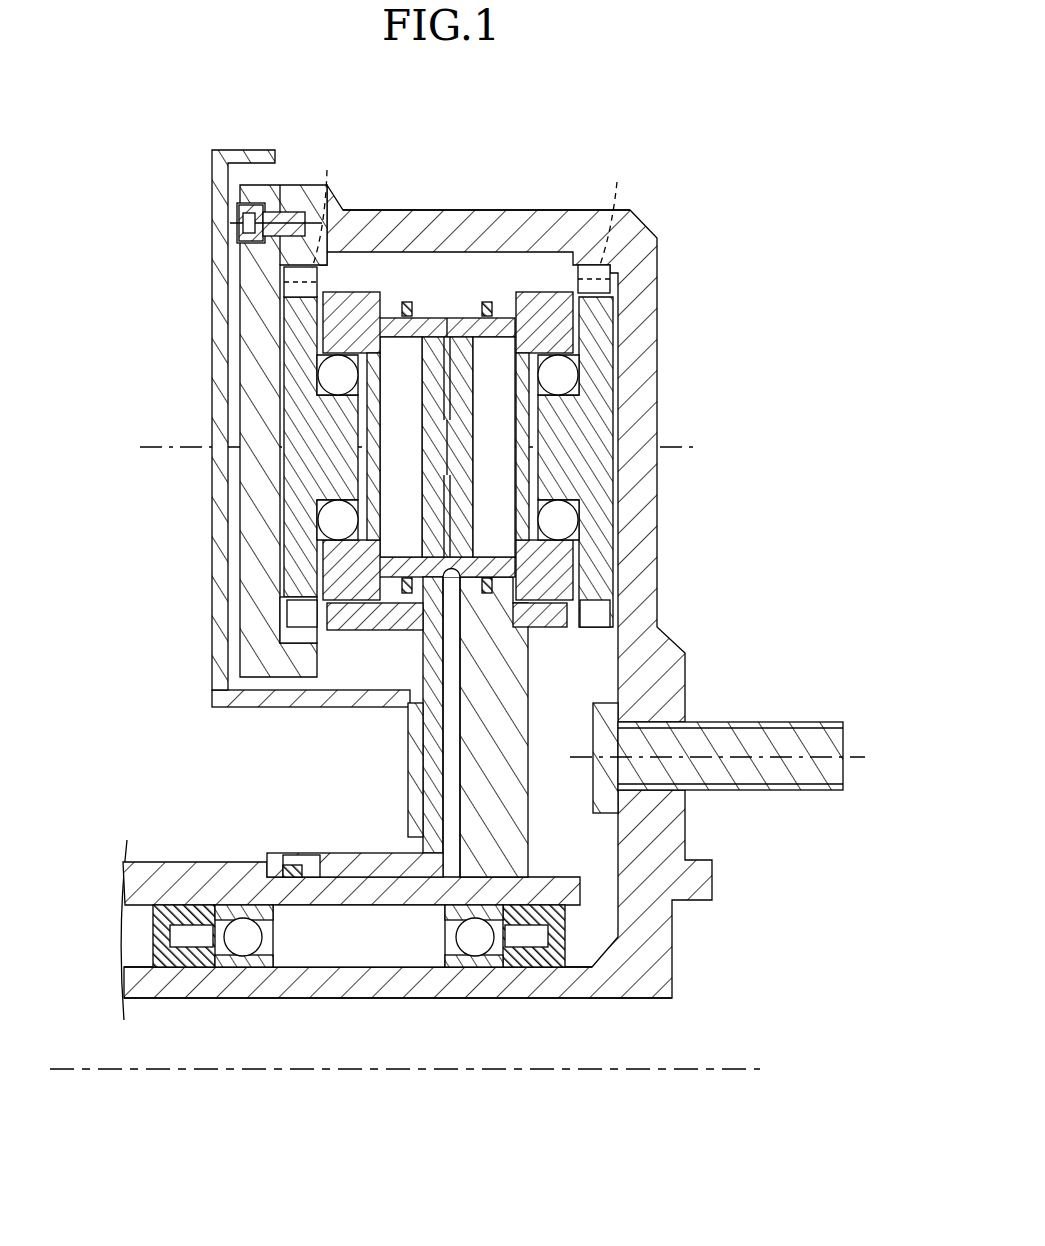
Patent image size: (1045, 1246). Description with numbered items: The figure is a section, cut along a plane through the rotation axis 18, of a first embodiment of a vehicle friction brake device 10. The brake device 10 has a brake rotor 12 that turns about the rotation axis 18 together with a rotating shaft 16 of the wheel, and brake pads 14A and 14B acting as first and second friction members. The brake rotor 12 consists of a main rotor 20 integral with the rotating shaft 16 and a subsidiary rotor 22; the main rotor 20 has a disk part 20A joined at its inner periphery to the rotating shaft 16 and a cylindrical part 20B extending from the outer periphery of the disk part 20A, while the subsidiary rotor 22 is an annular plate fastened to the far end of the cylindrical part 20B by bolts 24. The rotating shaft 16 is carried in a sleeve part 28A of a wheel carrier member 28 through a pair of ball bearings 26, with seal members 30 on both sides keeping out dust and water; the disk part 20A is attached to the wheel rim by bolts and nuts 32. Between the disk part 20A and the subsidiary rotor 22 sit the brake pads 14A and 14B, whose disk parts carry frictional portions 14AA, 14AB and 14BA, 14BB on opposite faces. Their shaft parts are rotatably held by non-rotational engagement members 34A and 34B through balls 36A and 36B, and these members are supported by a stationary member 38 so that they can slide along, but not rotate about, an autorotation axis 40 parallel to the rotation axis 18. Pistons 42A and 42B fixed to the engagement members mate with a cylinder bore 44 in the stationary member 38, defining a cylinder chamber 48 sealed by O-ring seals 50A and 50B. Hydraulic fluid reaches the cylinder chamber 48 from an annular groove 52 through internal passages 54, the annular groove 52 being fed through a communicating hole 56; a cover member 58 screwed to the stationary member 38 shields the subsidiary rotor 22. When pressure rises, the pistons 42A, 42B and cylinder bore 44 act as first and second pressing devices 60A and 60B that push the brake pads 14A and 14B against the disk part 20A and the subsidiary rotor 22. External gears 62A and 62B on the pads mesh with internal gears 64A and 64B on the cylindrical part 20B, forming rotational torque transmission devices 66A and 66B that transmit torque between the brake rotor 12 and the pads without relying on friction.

The brake device 10 is at (662, 185).
The brake rotor 12 is at (499, 208).
The brake pad 14A is at (635, 457).
The frictional portion 14AA is at (613, 312).
The frictional portion 14AB is at (572, 320).
The brake pad 14B is at (244, 441).
The frictional portion 14BA is at (284, 312).
The frictional portion 14BB is at (325, 320).
The rotating shaft 16 is at (340, 998).
The rotation axis 18 is at (735, 1069).
The main rotor 20 is at (437, 566).
The disk part 20A is at (659, 590).
The cylindrical part 20B is at (428, 209).
The subsidiary rotor 22 is at (238, 580).
The bolts 24 is at (255, 222).
The ball bearings 26 is at (243, 940).
The wheel carrier member 28 is at (165, 862).
The sleeve part 28A is at (355, 905).
The seal members 30 is at (183, 948).
The bolts and nuts 32 is at (790, 792).
The non-rotational engagement member 34A is at (525, 480).
The non-rotational engagement member 34B is at (370, 437).
The balls 36A is at (565, 520).
The balls 36B is at (330, 520).
The stationary member 38 is at (516, 833).
The autorotation axis 40 is at (702, 446).
The piston 42A is at (492, 575).
The piston 42B is at (405, 575).
The cylinder bore 44 is at (497, 600).
The cylinder chamber 48 is at (450, 318).
The O-ring seal 50A is at (510, 615).
The O-ring seal 50B is at (400, 630).
The annular groove 52 is at (375, 853).
The internal passages 54 is at (445, 735).
The communicating hole 56 is at (322, 862).
The cover member 58 is at (212, 650).
The first pressing device 60A is at (492, 300).
The second pressing device 60B is at (405, 300).
The external gear 62A is at (597, 613).
The external gear 62B is at (302, 620).
The internal gear 64A is at (617, 208).
The internal gear 64B is at (327, 204).
The rotational torque transmission device 66A is at (612, 280).
The rotational torque transmission device 66B is at (284, 283).